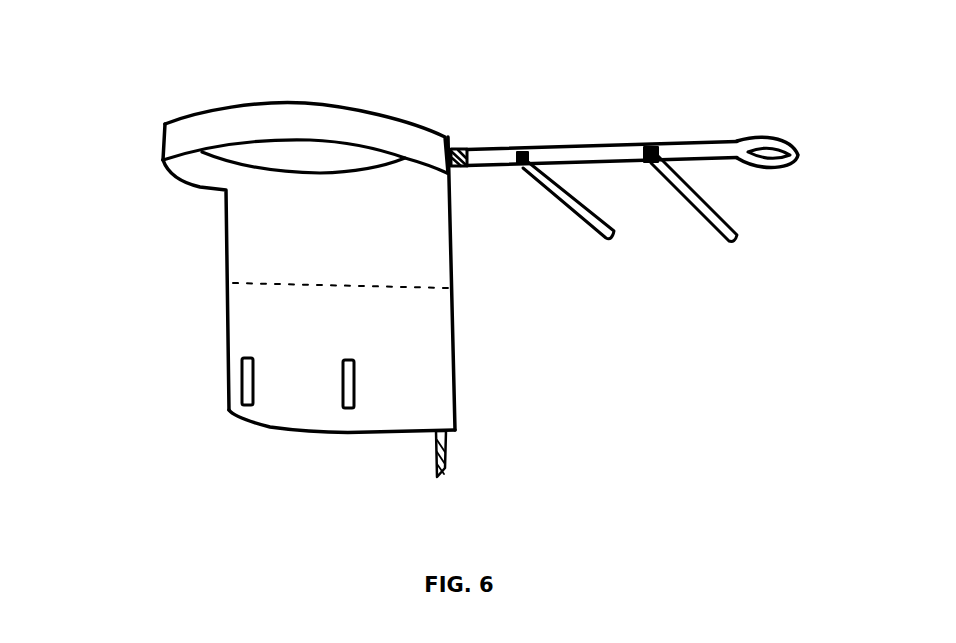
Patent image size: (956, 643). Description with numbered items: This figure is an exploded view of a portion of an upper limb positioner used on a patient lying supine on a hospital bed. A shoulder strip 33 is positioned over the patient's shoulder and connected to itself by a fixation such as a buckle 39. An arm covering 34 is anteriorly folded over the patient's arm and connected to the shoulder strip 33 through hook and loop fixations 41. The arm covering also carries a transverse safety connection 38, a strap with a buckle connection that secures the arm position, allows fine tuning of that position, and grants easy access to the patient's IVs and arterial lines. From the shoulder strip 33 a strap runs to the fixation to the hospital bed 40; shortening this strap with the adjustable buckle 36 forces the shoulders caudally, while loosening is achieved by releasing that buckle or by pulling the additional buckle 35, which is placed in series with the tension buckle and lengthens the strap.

The shoulder strip 33 is at (163, 122).
The arm covering 34 is at (253, 310).
The additional buckle 35 is at (530, 147).
The adjustable buckle 36 is at (647, 147).
The transverse safety connection 38 is at (448, 437).
The buckle 39 is at (460, 155).
The fixation to the hospital bed 40 is at (762, 140).
The hook and loop fixation 41 is at (250, 405).